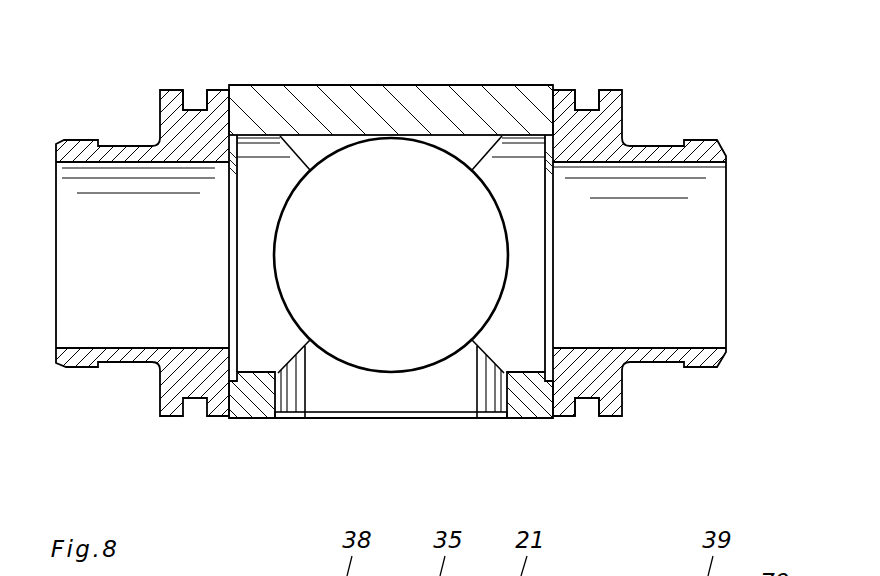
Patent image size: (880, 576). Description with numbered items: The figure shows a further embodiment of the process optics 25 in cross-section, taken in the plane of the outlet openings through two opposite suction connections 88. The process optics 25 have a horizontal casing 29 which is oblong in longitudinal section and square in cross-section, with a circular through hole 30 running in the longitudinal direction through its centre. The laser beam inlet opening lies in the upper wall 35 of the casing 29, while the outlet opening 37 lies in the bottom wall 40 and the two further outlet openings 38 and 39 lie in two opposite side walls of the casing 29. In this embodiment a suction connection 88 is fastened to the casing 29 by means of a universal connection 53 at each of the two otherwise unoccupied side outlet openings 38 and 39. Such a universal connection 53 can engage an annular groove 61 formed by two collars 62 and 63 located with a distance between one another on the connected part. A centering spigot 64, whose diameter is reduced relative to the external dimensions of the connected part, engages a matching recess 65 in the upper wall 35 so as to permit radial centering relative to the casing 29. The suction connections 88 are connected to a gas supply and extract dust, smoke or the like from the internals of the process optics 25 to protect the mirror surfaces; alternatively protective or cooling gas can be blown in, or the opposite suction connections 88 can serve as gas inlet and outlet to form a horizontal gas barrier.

The process optics 25 is at (672, 120).
The casing 29 is at (418, 106).
The circular through hole 30 is at (404, 212).
The upper wall 35 is at (318, 86).
The outlet opening 37 is at (342, 404).
The outlet opening 38 is at (260, 330).
The outlet opening 39 is at (522, 330).
The bottom wall 40 is at (243, 422).
The universal connection 53 is at (199, 80).
The annular groove 61 is at (588, 400).
The collar 62 is at (568, 408).
The collar 63 is at (173, 408).
The centering spigot 64 is at (234, 130).
The recess 65 is at (407, 419).
The suction connection 88 is at (125, 356).